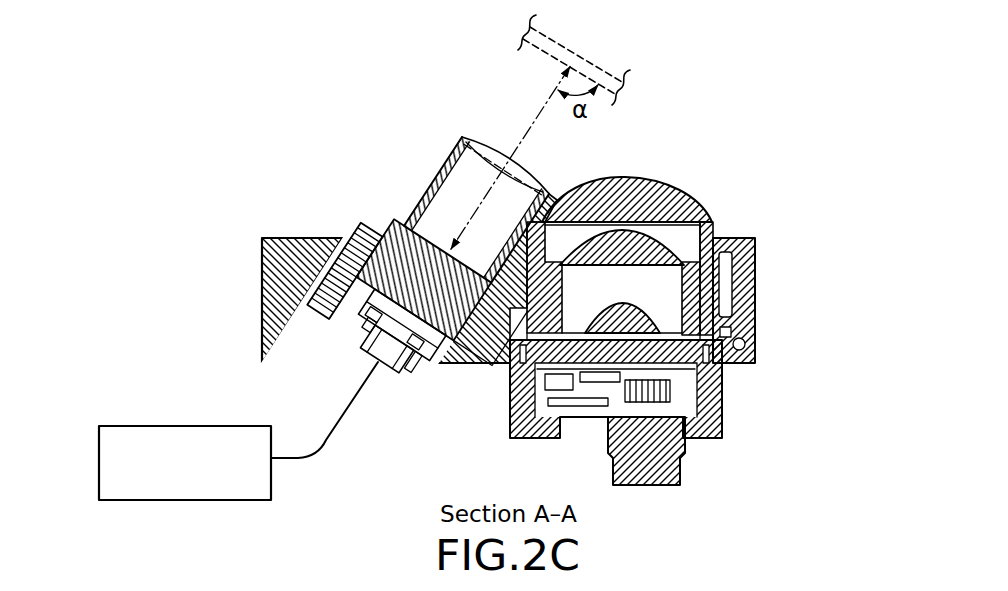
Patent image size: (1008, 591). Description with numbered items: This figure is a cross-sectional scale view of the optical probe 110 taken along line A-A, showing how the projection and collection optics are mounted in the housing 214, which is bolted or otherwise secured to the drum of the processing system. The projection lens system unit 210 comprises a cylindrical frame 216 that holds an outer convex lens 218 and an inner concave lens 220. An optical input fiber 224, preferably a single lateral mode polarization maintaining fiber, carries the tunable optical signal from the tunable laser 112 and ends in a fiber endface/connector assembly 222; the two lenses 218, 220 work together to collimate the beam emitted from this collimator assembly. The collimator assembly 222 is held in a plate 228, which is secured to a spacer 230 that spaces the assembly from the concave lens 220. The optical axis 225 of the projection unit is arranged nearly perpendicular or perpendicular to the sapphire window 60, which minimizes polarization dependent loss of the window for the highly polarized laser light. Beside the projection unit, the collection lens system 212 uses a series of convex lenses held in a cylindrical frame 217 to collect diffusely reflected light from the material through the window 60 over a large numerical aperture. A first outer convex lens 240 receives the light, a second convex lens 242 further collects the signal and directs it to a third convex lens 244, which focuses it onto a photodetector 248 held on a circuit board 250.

The sapphire window 60 is at (550, 52).
The probe 110 is at (290, 115).
The tunable laser 112 is at (205, 494).
The projection lens system unit 210 is at (383, 227).
The collection lens system 212 is at (736, 295).
The housing 214 is at (318, 232).
The cylindrical frame 216 is at (432, 158).
The cylindrical frame 217 is at (712, 233).
The outer convex lens 218 is at (536, 158).
The inner concave lens 220 is at (427, 271).
The fiber endface/connector assembly 222 is at (380, 338).
The optical input fiber 224 is at (320, 456).
The optical axis 225 is at (522, 128).
The plate 228 is at (362, 341).
The spacer 230 is at (418, 374).
The first outer convex lens 240 is at (648, 172).
The second convex lens 242 is at (668, 237).
The third convex lens 244 is at (625, 332).
The photodetector 248 is at (580, 437).
The circuit board 250 is at (620, 362).